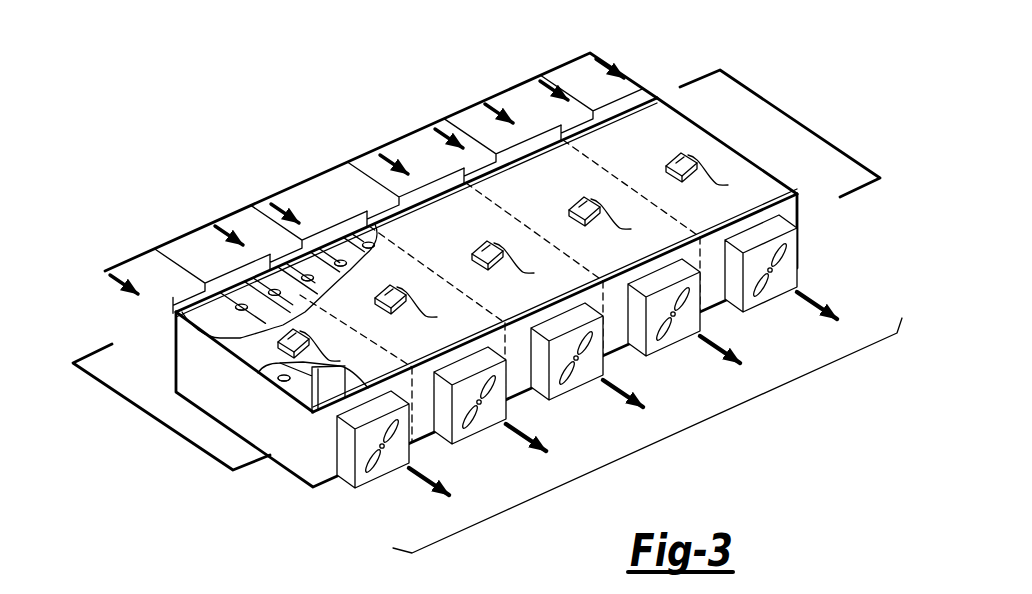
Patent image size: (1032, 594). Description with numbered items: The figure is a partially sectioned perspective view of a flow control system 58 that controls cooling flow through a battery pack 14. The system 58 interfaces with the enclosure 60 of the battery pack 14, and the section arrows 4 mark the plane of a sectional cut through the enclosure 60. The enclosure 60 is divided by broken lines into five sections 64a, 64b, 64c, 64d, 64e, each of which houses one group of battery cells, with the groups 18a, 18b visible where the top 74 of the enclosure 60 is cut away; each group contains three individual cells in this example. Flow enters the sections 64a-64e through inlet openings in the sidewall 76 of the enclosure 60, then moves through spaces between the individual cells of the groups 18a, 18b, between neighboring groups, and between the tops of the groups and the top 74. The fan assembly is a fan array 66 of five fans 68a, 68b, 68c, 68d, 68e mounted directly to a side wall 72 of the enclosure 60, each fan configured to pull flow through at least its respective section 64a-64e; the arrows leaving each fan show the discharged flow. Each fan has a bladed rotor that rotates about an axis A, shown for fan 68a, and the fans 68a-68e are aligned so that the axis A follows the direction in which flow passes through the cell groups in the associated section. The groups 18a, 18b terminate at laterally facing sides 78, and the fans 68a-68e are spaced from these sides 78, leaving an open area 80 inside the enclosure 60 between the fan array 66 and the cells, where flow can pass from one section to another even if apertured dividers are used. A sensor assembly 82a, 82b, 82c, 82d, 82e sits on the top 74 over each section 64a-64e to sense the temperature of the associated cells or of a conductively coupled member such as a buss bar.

The section line 4- 4 is at (153, 417).
The battery pack 14 is at (668, 88).
The group of battery cells 18a is at (255, 288).
The group of battery cells 18b is at (335, 248).
The flow control system 58 is at (828, 231).
The enclosure 60 is at (762, 165).
The section 64a is at (205, 287).
The section 64b is at (302, 241).
The section 64c is at (399, 197).
The section 64d is at (496, 154).
The section 64e is at (593, 111).
The fan array 66 is at (663, 440).
The fan 68a is at (383, 478).
The fan 68b is at (482, 432).
The fan 68c is at (577, 389).
The fan 68d is at (673, 345).
The fan 68e is at (769, 301).
The side wall 72 is at (326, 463).
The top 74 is at (677, 130).
The sidewall 76 is at (178, 316).
The laterally facing side 78 is at (328, 388).
The open area 80 is at (312, 399).
The sensor assembly 82a is at (327, 351).
The sensor assembly 82b is at (424, 307).
The sensor assembly 82c is at (521, 263).
The sensor assembly 82d is at (618, 219).
The sensor assembly 82e is at (715, 175).
The axis A is at (396, 449).